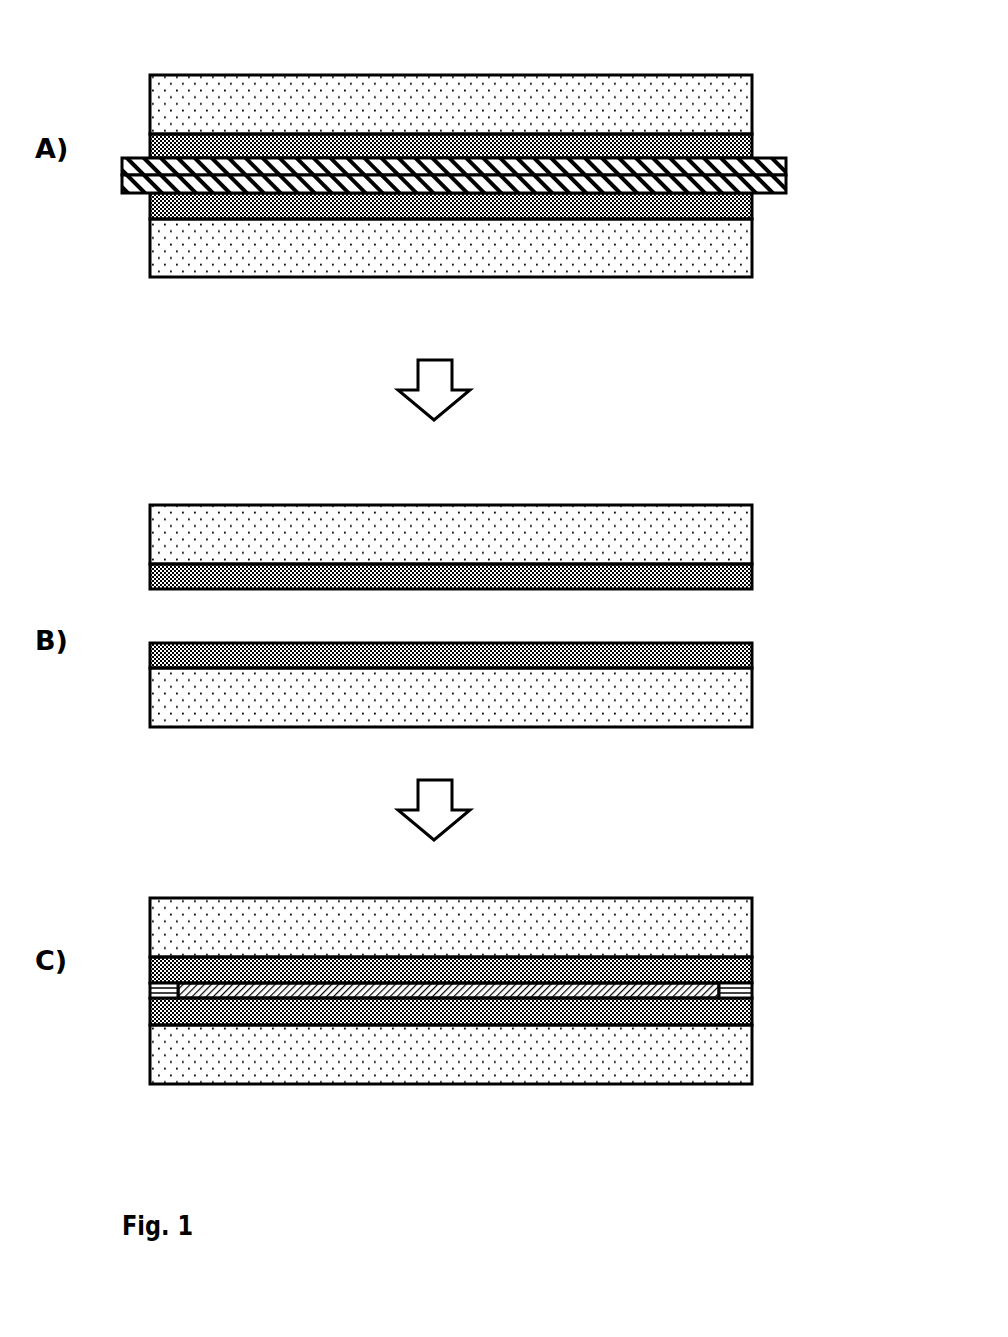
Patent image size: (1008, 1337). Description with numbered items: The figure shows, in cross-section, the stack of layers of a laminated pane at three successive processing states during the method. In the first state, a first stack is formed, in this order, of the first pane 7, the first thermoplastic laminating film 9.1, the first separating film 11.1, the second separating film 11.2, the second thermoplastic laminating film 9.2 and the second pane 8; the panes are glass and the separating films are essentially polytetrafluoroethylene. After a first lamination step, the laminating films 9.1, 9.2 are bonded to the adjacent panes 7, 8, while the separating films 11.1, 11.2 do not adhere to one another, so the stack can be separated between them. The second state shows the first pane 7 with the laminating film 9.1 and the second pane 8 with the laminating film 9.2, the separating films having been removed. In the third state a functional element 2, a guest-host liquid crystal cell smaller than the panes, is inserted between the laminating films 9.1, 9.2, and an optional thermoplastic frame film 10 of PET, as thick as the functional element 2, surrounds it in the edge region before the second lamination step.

The functional element 2 is at (628, 991).
The first pane 7 is at (728, 264).
The second pane 8 is at (725, 95).
The first thermoplastic laminating film 9.1 is at (730, 207).
The second thermoplastic laminating film 9.2 is at (737, 143).
The thermoplastic frame film 10 is at (740, 993).
The first separating film 11.1 is at (765, 188).
The second separating film 11.2 is at (772, 165).